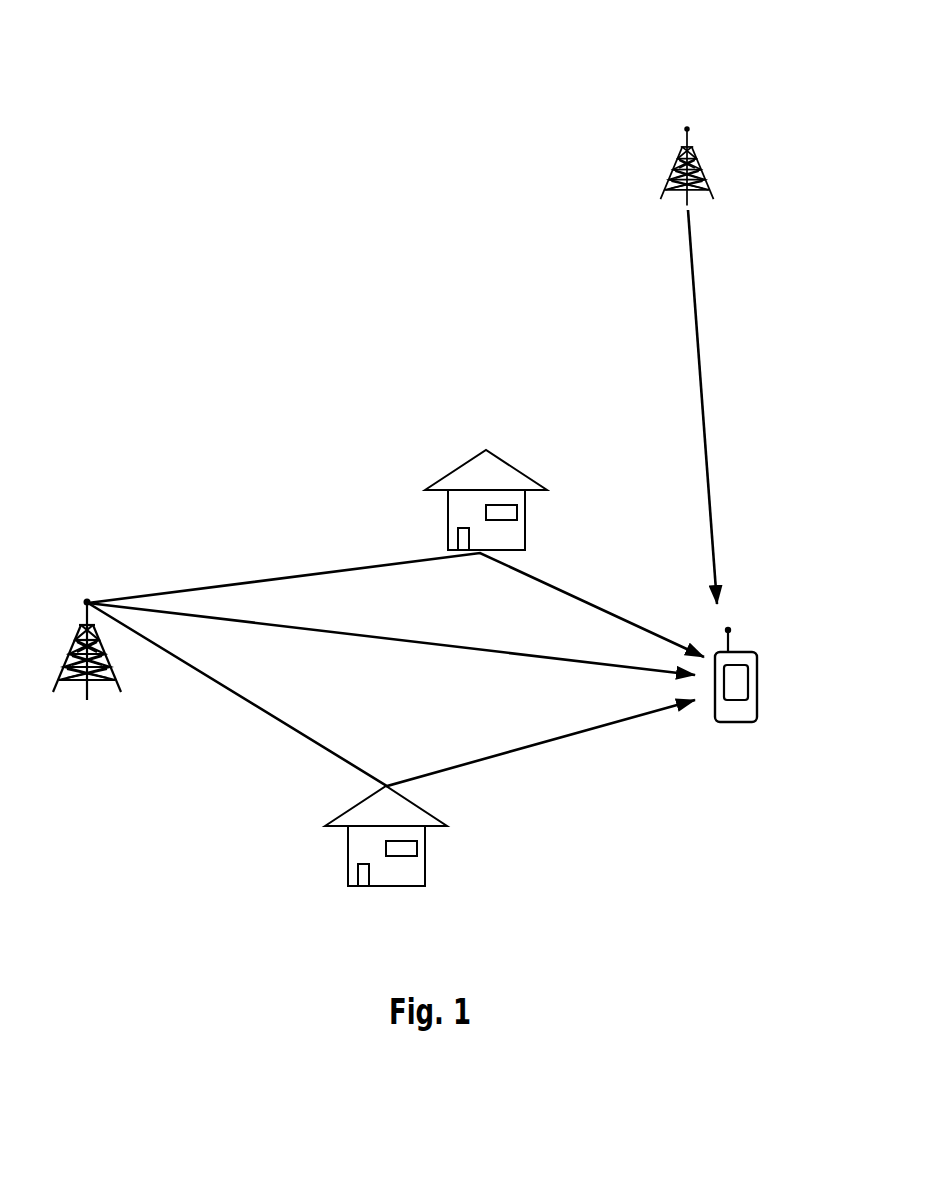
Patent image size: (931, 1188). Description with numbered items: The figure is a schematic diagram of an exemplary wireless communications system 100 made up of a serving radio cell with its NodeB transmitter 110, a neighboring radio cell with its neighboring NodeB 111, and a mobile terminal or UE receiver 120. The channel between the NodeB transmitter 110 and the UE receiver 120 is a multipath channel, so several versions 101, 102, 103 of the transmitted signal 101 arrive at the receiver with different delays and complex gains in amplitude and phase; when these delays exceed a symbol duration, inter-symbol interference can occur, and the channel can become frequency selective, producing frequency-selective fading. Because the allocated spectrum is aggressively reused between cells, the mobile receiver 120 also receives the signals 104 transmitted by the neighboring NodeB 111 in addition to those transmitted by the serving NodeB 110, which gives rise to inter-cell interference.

The wireless communications system 100 is at (157, 116).
The serving NodeB transmitter 110 is at (82, 578).
The neighboring NodeB 111 is at (683, 110).
The UE receiver 120 is at (750, 632).
The transmitted signal 101 is at (347, 644).
The version of the transmitted signal 102 is at (215, 578).
The version of the transmitted signal 103 is at (262, 724).
The signals transmitted by neighboring NodeB 104 is at (707, 304).